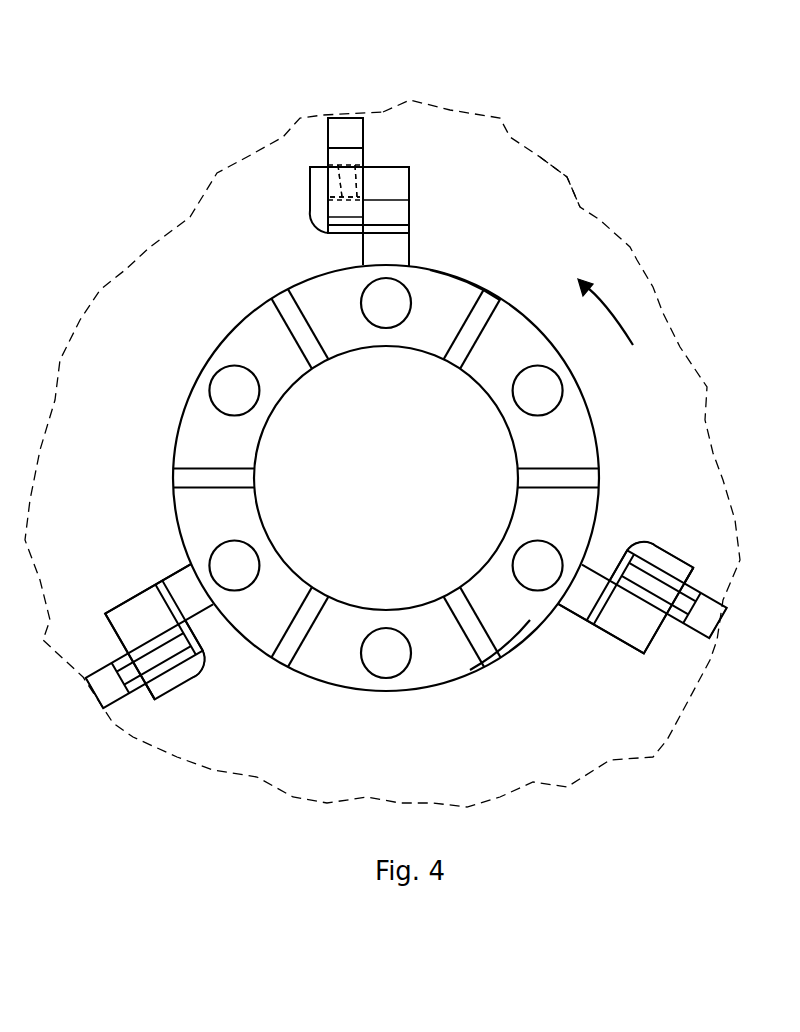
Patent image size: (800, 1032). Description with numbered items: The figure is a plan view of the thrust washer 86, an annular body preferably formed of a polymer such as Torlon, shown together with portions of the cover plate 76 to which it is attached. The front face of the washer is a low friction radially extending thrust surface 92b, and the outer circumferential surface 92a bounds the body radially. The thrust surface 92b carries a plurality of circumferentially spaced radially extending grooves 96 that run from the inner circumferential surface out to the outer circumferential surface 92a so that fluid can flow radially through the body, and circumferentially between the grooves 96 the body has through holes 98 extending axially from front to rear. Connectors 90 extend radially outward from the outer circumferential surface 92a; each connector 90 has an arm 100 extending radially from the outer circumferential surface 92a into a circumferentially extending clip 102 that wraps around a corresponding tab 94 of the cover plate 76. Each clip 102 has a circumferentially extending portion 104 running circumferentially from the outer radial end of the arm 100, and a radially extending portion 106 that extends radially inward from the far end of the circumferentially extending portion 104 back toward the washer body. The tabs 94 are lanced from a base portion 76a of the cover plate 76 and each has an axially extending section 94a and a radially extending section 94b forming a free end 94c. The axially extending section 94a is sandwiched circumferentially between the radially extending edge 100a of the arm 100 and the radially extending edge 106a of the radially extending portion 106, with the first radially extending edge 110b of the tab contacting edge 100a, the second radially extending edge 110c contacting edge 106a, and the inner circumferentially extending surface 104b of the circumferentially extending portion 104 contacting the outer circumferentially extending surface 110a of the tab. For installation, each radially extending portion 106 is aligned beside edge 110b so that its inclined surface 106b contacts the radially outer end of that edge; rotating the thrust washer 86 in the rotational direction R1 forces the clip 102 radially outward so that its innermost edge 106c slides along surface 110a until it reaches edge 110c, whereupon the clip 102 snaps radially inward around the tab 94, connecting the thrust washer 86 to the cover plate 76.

The cover plate 76 is at (532, 128).
The base portion of cover plate 76a is at (548, 182).
The thrust washer 86 is at (523, 296).
The connectors 90 is at (428, 166).
The outer circumferential surface 92a is at (482, 276).
The thrust surface 92b is at (521, 586).
The lanced tabs 94 is at (358, 118).
The axially extending section of tab 94a is at (337, 203).
The radially extending section of tab 94b is at (360, 173).
The free end of tab 94c is at (347, 150).
The radially extending grooves 96 is at (310, 350).
The through holes 98 is at (548, 384).
The arm 100 is at (411, 190).
The radially extending edge of arm 100a is at (410, 242).
The clip 102 is at (300, 158).
The circumferentially extending portion 104 is at (351, 136).
The inner circumferentially extending surface 104b is at (342, 175).
The radially extending portion 106 is at (317, 187).
The radially extending edge of radially extending portion 106a is at (307, 203).
The inclined surface 106b is at (323, 220).
The innermost edge of radially extending portion 106c is at (320, 222).
The outer circumferentially extending surface 110a is at (395, 166).
The first radially extending edge 110b is at (400, 205).
The second radially extending edge 110c is at (342, 233).
The rotational direction R1 is at (614, 312).